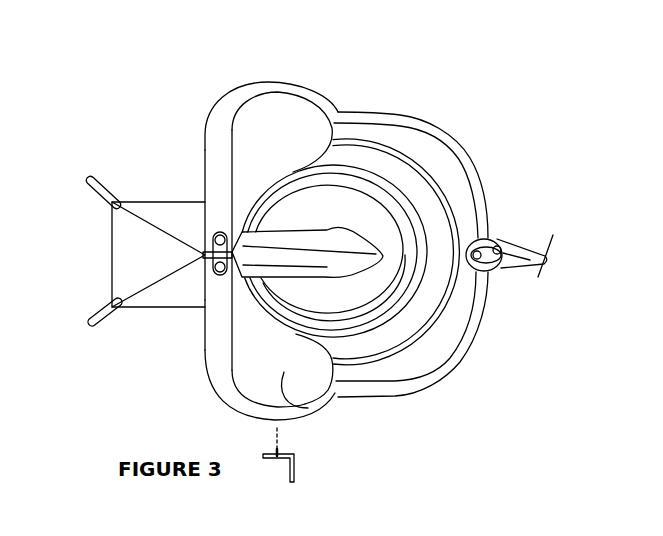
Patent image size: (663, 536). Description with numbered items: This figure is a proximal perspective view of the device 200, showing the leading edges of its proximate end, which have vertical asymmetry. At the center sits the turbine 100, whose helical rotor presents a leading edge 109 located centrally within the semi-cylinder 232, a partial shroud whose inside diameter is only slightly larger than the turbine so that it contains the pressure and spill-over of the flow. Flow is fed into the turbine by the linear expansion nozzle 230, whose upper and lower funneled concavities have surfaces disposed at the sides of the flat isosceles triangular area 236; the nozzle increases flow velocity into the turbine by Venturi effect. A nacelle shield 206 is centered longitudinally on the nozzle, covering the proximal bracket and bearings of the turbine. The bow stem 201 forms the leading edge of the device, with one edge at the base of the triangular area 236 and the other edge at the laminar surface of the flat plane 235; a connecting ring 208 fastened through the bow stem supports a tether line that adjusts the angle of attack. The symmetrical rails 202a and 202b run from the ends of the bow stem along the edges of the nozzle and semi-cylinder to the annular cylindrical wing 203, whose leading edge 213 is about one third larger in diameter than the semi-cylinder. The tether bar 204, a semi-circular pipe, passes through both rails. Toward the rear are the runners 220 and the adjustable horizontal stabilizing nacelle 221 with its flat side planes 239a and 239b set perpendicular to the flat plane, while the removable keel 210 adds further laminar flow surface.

The turbine 100 is at (353, 190).
The leading edge 109 is at (273, 185).
The device 200 is at (355, 32).
The bow stem 201 is at (217, 330).
The rail 202a is at (252, 408).
The rail 202b is at (268, 88).
The annular cylindrical wing 203 is at (438, 227).
The tether bar 204 is at (471, 331).
The nacelle shield 206 is at (340, 256).
The connecting ring 208 is at (208, 250).
The removable keel 210 is at (290, 478).
The leading edge 213 is at (441, 188).
The runners 220 is at (93, 318).
The adjustable horizontal stabilizing nacelle 221 is at (137, 271).
The linear expansion nozzle 230 is at (308, 412).
The semi-cylinder 232 is at (283, 177).
The flat plane 235 is at (204, 330).
The triangular area 236 is at (237, 372).
The flat side plane 239a is at (147, 300).
The flat side plane 239b is at (155, 210).